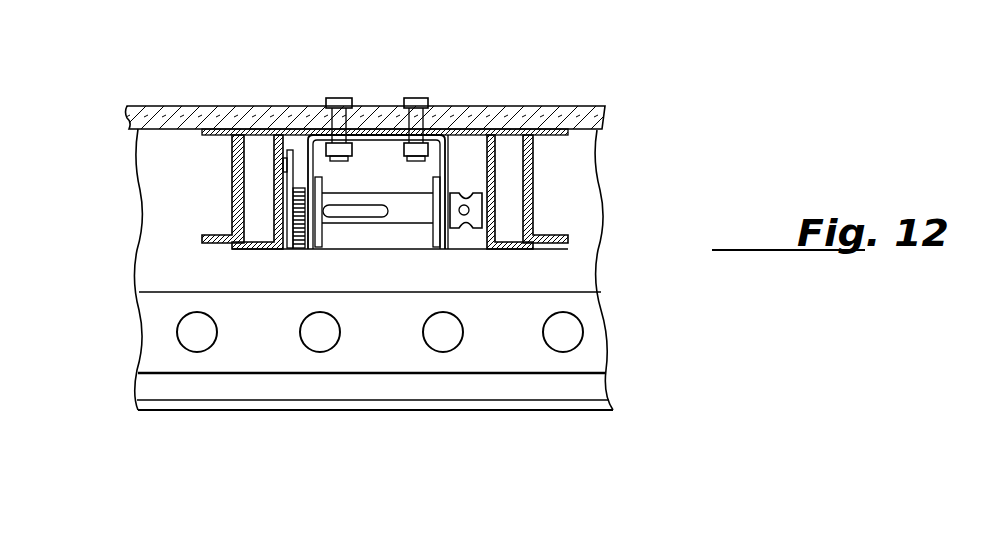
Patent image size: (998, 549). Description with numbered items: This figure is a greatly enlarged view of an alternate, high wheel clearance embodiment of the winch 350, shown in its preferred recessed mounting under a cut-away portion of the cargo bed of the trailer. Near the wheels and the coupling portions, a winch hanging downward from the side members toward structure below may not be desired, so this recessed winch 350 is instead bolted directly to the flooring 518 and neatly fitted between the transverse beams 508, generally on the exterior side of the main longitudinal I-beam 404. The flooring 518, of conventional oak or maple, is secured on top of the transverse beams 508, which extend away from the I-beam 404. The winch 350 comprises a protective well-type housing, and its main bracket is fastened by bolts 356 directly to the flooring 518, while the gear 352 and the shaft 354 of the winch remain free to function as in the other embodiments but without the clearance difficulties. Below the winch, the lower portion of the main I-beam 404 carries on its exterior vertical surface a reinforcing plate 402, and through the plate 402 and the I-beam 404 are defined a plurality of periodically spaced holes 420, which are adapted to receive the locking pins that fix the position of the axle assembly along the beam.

The recessed winch 350 is at (243, 249).
The gear 352 is at (300, 249).
The shaft 354 is at (408, 218).
The bolts 356 is at (415, 98).
The reinforcing plate 402 is at (605, 309).
The main longitudinal I-beam 404 is at (598, 240).
The holes 420 is at (546, 330).
The transverse beams 508 is at (234, 182).
The flooring 518 is at (532, 110).